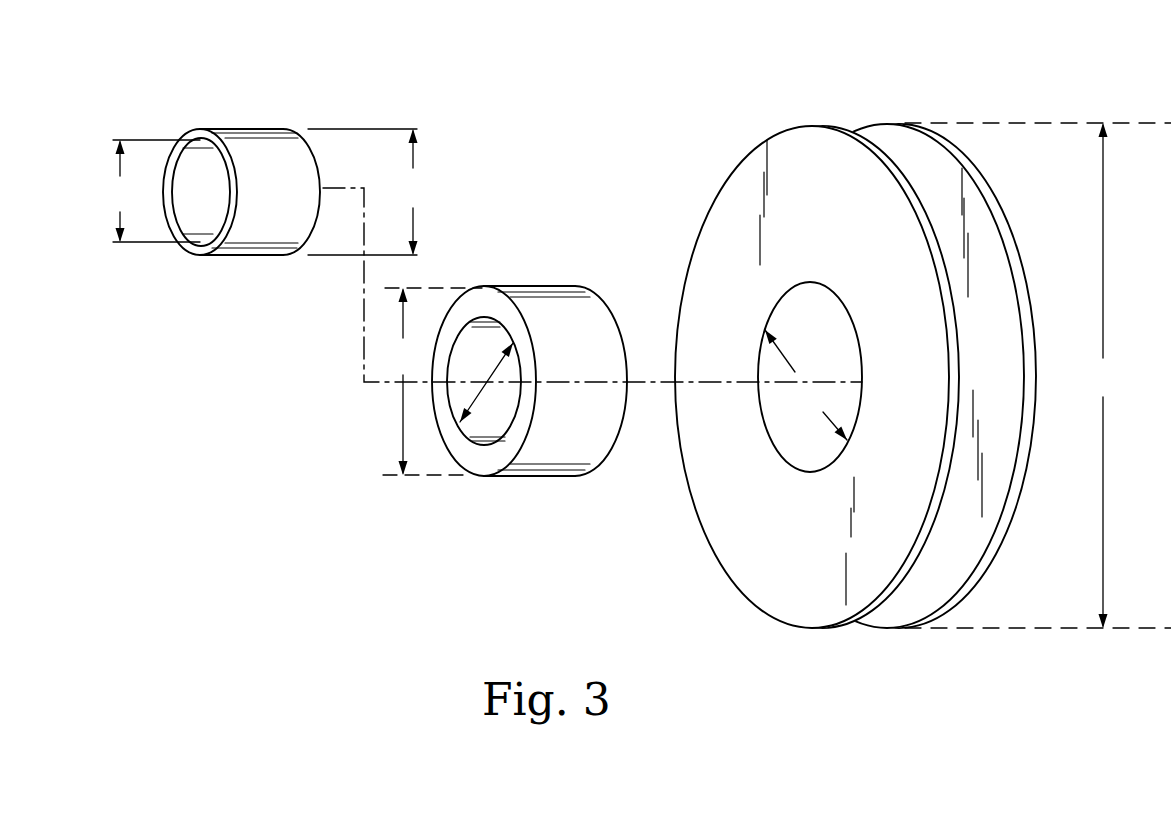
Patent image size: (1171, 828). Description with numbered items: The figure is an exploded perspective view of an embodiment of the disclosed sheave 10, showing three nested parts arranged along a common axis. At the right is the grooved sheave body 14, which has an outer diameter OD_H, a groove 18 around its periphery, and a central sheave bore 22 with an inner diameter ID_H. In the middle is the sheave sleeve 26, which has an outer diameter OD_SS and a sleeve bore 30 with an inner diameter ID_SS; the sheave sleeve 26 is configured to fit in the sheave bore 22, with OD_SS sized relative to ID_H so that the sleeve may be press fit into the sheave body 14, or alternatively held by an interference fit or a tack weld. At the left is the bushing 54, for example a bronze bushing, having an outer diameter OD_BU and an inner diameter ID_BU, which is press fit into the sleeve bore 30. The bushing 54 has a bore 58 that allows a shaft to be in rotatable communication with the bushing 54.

The sheave 10 is at (575, 118).
The sheave body 14 is at (812, 605).
The groove 18 is at (922, 598).
The sheave bore 22 is at (800, 443).
The sheave sleeve 26 is at (535, 305).
The sleeve bore 30 is at (475, 337).
The bushing 54 is at (243, 142).
The bore 58 is at (202, 220).